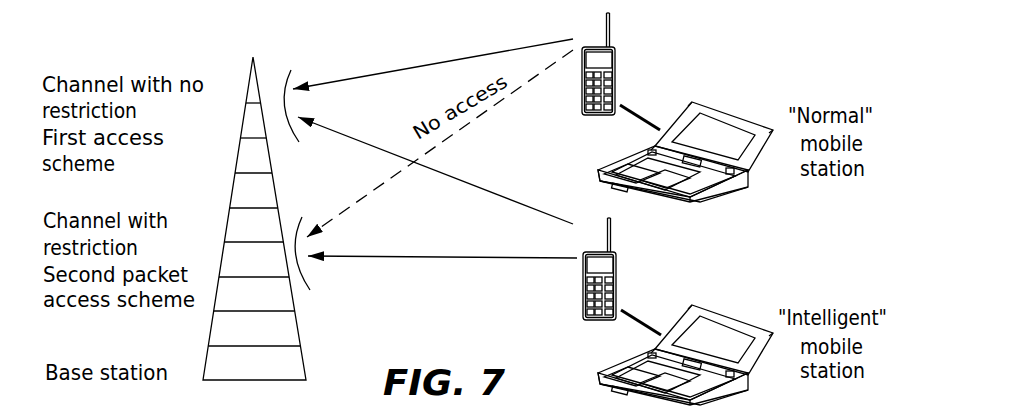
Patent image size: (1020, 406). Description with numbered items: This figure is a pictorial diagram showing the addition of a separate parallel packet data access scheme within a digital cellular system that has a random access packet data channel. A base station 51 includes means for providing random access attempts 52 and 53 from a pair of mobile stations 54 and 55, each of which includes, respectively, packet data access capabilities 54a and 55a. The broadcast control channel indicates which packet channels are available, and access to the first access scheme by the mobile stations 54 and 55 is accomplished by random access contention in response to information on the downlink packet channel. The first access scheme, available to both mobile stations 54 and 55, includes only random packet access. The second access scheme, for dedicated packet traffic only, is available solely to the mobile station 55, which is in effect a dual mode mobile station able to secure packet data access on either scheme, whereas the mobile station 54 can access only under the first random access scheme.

The base station 51 is at (298, 323).
The random access attempt 52 is at (390, 71).
The random access attempt 53 is at (485, 190).
The mobile station 54 is at (617, 55).
The packet data access capability 54a is at (732, 110).
The mobile station 55 is at (618, 260).
The packet data access capability 55a is at (732, 313).